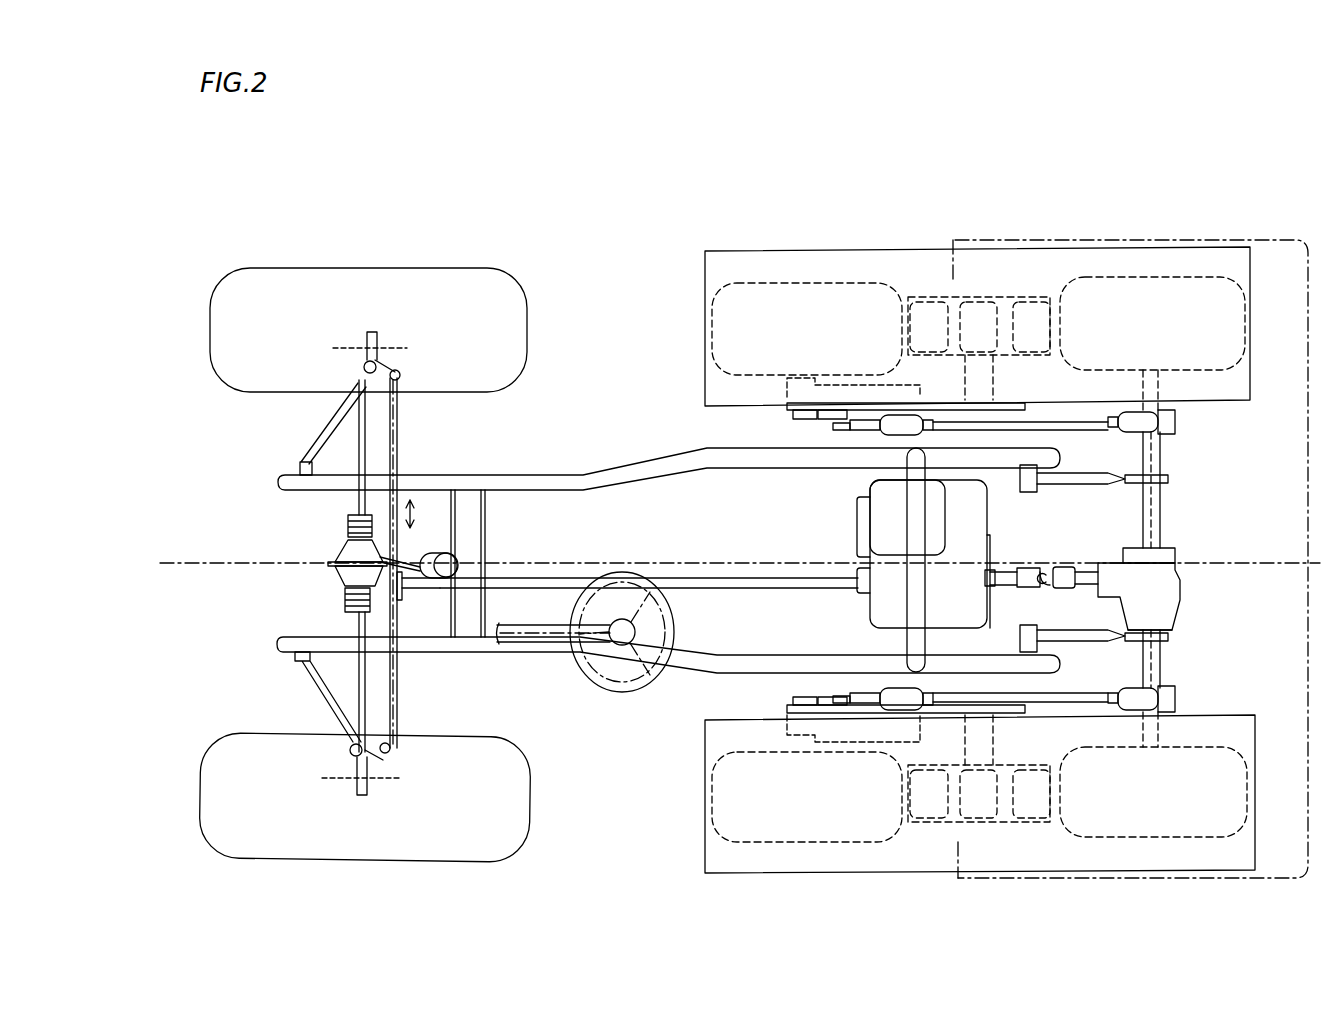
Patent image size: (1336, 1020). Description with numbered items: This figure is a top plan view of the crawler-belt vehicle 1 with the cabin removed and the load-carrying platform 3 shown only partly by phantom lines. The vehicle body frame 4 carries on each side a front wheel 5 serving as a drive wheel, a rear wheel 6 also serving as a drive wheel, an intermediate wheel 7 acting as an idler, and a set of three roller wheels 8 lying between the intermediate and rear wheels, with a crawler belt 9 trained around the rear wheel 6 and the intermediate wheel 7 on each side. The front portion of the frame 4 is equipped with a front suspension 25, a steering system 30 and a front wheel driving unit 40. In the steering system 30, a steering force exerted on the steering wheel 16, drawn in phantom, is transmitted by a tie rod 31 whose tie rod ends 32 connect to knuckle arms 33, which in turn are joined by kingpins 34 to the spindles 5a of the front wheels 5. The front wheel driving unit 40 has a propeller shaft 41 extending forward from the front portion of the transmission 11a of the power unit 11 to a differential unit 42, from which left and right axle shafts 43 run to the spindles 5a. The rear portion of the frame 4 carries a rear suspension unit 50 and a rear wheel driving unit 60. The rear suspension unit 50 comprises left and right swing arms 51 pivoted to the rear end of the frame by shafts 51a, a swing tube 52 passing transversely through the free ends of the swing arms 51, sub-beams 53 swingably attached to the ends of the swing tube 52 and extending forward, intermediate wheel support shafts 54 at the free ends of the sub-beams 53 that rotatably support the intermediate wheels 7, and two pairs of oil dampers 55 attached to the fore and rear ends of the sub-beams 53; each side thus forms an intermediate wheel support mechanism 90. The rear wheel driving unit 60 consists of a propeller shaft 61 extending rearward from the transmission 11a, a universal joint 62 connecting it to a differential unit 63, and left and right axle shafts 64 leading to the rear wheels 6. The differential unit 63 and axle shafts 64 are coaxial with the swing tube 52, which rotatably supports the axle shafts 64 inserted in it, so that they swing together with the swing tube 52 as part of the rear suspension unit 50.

The crawler-belt vehicle 1 is at (218, 227).
The load-carrying platform 3 is at (1248, 240).
The vehicle body frame 4 is at (641, 462).
The front wheels 5 is at (305, 272).
The spindles 5a is at (378, 330).
The rear wheels 6 is at (1140, 277).
The intermediate wheels 7 is at (790, 283).
The roller wheels 8 is at (1030, 312).
The crawler belts 9 is at (705, 263).
The engine 11 is at (885, 531).
The transmission 11a is at (876, 600).
The steering wheel 16 is at (627, 693).
The front suspension 25 is at (298, 458).
The steering system 30 is at (402, 622).
The tie rod 31 is at (398, 437).
The tie rod ends 32 is at (400, 376).
The knuckle arms 33 is at (385, 370).
The kingpins 34 is at (360, 368).
The front wheel driving unit 40 is at (322, 547).
The propeller shaft 41 is at (748, 590).
The differential unit 42 is at (335, 580).
The axle shafts 43 is at (360, 420).
The rear suspension unit 50 is at (1188, 418).
The swing arms 51 is at (1078, 482).
The shafts 51a is at (1020, 480).
The swing tube 52 is at (1165, 500).
The sub-beams 53 is at (1065, 426).
The intermediate wheel support shafts 54 is at (790, 396).
The oil dampers 55 is at (890, 430).
The rear wheel driving unit 60 is at (1186, 552).
The propeller shaft 61 is at (1006, 590).
The universal joint 62 is at (1062, 570).
The differential unit 63 is at (1165, 596).
The axle shafts 64 is at (1150, 370).
The intermediate wheel support mechanism 90 is at (822, 385).